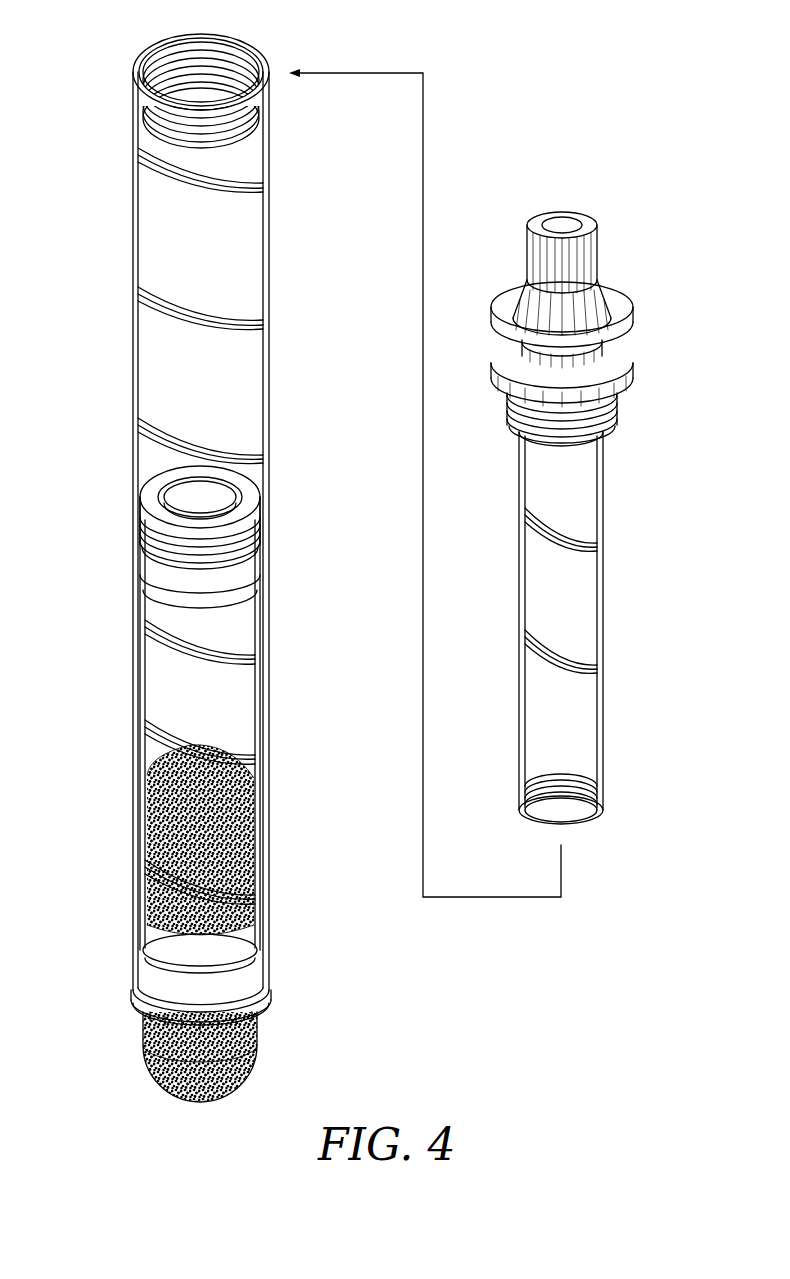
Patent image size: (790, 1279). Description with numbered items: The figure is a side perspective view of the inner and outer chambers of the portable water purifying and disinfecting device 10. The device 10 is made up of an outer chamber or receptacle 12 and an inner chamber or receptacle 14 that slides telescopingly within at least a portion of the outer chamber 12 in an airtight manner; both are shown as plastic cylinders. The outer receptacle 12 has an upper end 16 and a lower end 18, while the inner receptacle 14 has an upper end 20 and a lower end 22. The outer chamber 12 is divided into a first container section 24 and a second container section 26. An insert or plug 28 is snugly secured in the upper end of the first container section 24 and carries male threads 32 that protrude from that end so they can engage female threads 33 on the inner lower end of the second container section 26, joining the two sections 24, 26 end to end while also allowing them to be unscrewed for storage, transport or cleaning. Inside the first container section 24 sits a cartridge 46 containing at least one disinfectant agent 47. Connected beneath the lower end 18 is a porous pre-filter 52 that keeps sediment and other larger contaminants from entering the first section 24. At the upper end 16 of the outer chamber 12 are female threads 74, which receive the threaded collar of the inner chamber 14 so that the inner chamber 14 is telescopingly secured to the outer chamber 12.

The portable water purifying and disinfecting device 10 is at (597, 101).
The outer chamber or receptacle 12 is at (180, 499).
The inner chamber or receptacle 14 is at (612, 628).
The upper end of outer chamber 16 is at (138, 88).
The lower end of outer chamber 18 is at (132, 970).
The upper end of inner chamber 20 is at (610, 420).
The lower end of inner chamber 22 is at (605, 790).
The first container section 24 is at (200, 717).
The second container section 26 is at (155, 238).
The insert or plug 28 is at (150, 565).
The male threads 32 is at (255, 530).
The female threads 33 is at (147, 505).
The cartridge 46 is at (255, 700).
The disinfectant agent 47 is at (243, 832).
The pre-filter 52 is at (237, 1058).
The female threads 74 is at (162, 62).